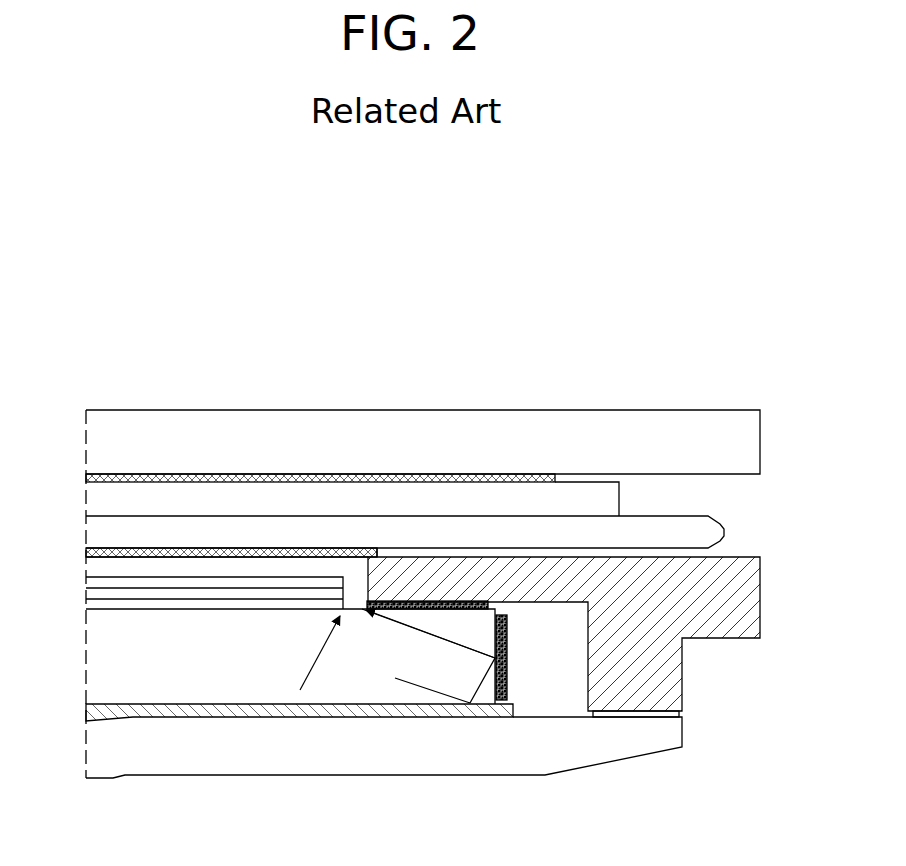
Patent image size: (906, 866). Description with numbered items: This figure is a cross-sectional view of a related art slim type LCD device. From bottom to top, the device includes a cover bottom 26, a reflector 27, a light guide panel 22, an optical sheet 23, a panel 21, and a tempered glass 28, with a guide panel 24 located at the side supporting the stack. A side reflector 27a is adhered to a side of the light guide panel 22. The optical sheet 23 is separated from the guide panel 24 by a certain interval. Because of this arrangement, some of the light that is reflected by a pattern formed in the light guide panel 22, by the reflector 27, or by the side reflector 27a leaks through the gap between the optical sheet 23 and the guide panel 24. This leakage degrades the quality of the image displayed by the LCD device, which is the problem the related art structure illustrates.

The tempered glass 28 is at (78, 412).
The panel 21 is at (78, 476).
The optical sheet 23 is at (78, 580).
The light guide panel 22 is at (78, 611).
The guide panel 24 is at (730, 627).
The reflector 27 is at (104, 708).
The side reflector 27a is at (507, 667).
The cover bottom 26 is at (366, 755).